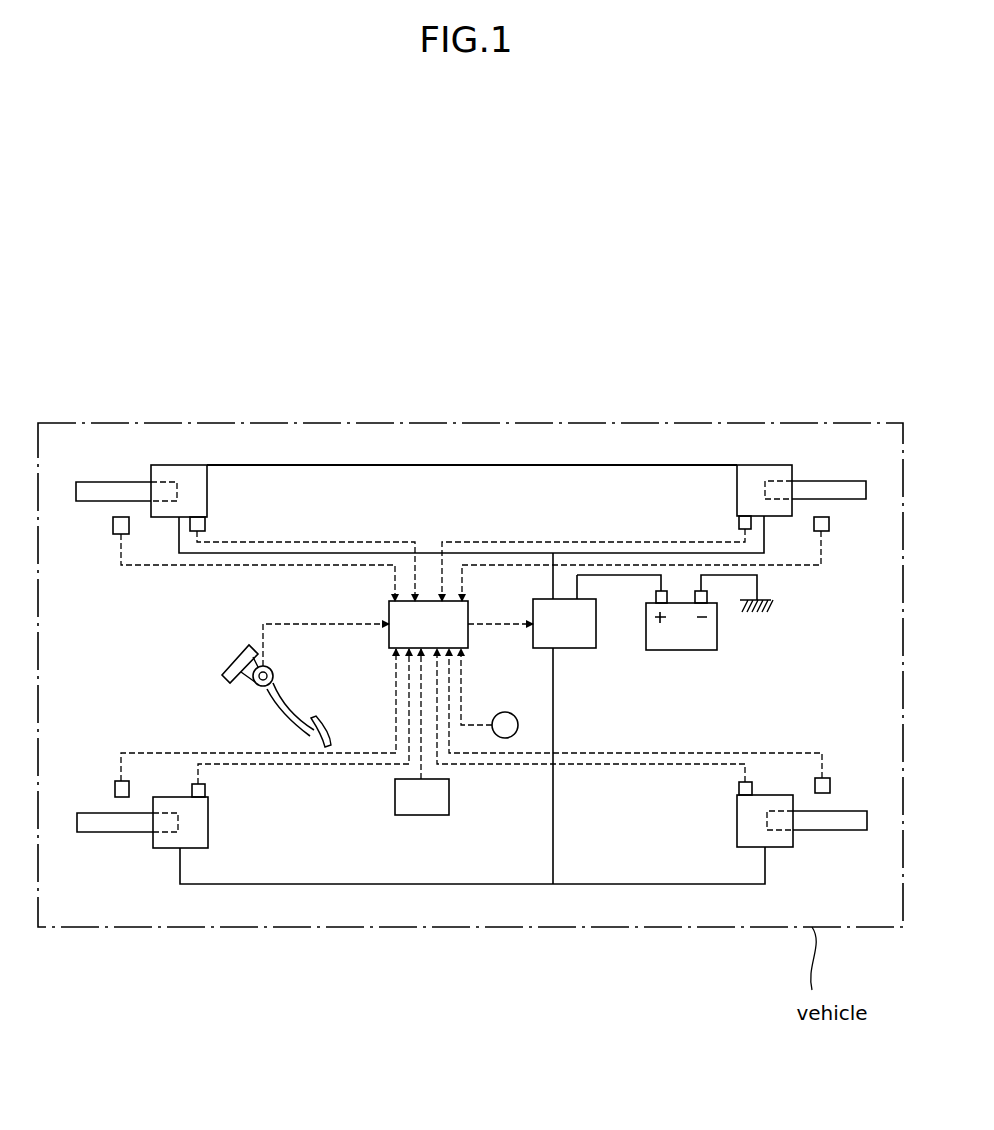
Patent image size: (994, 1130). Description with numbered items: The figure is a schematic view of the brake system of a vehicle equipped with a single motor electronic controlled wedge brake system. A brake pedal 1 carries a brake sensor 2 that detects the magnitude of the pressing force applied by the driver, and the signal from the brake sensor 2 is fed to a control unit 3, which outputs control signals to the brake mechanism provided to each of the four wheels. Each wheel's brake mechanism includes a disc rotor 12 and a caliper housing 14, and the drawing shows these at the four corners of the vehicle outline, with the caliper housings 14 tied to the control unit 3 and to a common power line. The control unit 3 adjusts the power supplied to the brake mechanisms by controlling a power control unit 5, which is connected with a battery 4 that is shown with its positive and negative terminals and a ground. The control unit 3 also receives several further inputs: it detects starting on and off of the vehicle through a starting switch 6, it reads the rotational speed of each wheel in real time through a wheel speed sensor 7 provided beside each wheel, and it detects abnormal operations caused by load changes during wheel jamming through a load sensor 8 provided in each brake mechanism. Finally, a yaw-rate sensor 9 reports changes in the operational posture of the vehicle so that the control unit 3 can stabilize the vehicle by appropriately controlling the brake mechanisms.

The brake pedal 1 is at (273, 700).
The brake sensor 2 is at (258, 687).
The control unit 3 is at (426, 605).
The battery 4 is at (717, 638).
The power control unit 5 is at (577, 648).
The starting switch 6 is at (510, 728).
The wheel speed sensor 7 is at (831, 787).
The load sensor 8 is at (739, 786).
The yaw-rate sensor 9 is at (420, 807).
The disc rotor 12 is at (110, 829).
The caliper housing 14 is at (160, 849).